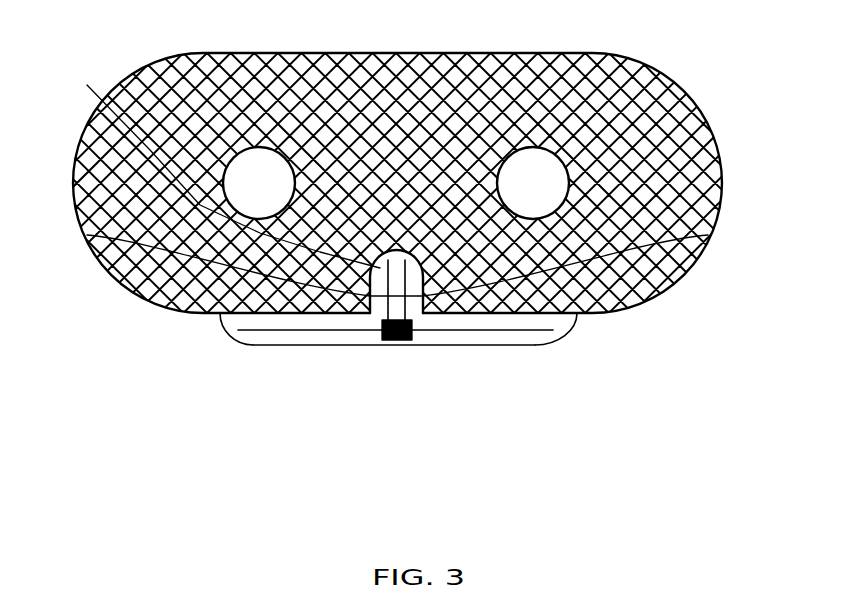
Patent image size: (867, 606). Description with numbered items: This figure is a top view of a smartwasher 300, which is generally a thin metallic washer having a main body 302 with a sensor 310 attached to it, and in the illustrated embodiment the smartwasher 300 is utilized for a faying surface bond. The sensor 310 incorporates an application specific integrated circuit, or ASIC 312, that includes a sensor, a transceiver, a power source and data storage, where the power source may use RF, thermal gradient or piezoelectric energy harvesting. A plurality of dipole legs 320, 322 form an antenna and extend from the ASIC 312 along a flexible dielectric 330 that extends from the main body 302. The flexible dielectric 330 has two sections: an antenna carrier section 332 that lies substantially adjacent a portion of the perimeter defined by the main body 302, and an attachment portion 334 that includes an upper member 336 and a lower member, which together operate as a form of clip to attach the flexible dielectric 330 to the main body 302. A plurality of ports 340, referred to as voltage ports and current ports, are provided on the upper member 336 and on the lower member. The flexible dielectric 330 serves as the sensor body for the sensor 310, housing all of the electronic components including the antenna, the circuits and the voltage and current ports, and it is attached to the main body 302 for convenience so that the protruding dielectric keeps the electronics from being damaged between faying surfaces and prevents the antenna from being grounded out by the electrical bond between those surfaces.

The smartwasher 300 is at (712, 137).
The main body 302 is at (680, 200).
The sensor 310 is at (398, 342).
The application specific integrated circuit (ASIC) 312 is at (389, 342).
The dipole leg 320 is at (254, 346).
The dipole leg 322 is at (530, 332).
The flexible dielectric 330 is at (230, 323).
The antenna carrier section 332 is at (558, 322).
The attachment portion 334 is at (422, 161).
The upper member 336 is at (223, 164).
The ports 340 is at (87, 235).